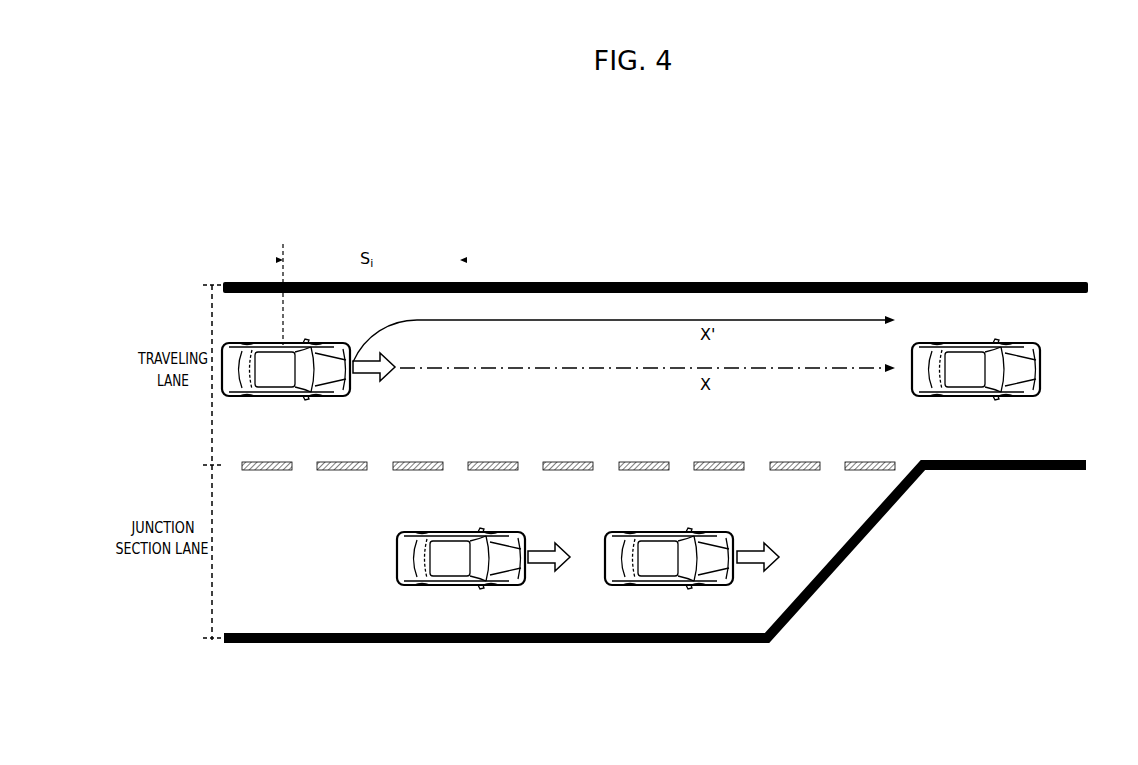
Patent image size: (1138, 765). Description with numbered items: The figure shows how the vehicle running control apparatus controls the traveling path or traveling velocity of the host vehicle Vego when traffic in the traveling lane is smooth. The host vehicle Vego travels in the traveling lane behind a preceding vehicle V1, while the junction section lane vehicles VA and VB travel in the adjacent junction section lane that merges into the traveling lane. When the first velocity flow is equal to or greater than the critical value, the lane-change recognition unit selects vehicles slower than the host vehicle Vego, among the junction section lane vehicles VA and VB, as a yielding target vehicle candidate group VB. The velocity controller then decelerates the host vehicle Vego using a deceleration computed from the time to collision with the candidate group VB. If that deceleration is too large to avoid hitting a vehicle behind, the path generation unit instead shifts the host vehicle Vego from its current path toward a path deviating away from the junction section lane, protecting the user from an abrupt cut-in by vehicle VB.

The host vehicle Vego is at (308, 370).
The preceding vehicle in traveling lane V1 is at (976, 369).
The yielding target vehicle candidate group VB is at (483, 559).
The junction section lane vehicle VA is at (692, 559).